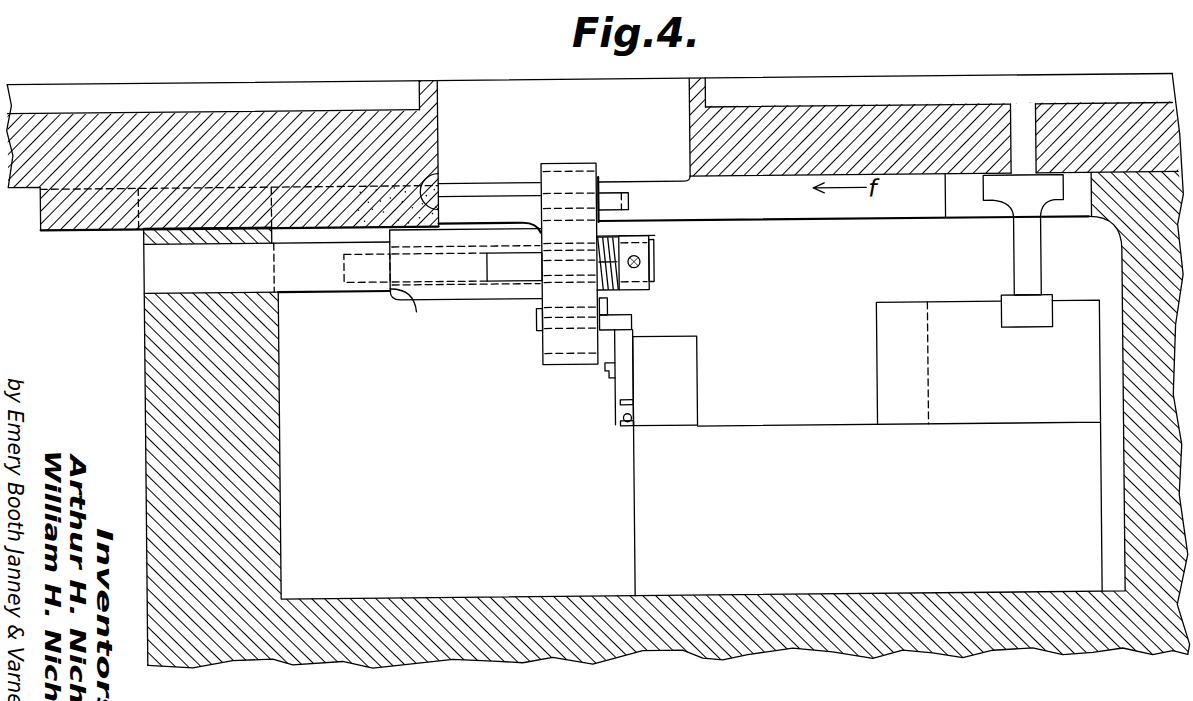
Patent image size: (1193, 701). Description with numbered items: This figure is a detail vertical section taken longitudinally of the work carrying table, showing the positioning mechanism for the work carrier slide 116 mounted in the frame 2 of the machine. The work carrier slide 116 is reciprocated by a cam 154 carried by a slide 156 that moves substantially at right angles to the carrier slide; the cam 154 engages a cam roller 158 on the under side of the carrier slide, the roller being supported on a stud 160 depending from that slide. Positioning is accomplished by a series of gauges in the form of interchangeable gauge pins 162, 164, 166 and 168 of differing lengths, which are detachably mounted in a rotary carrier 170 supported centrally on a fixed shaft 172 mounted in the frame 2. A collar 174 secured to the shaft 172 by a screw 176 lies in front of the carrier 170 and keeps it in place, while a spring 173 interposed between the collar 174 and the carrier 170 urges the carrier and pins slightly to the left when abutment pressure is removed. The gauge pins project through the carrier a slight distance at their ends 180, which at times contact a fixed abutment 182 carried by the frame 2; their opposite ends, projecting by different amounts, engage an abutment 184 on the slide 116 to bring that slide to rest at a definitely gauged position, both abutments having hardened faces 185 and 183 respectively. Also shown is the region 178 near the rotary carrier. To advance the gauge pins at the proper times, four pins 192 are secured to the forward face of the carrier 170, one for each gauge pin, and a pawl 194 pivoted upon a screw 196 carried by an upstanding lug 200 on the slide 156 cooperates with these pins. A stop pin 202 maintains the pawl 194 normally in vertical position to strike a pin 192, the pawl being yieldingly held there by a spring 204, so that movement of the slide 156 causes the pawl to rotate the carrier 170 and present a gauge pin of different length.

The frame 2 is at (162, 384).
The work carrier slide 116 is at (1122, 120).
The cam 154 is at (895, 373).
The slide 156 is at (648, 508).
The cam roller 158 is at (1043, 304).
The stud 160 is at (1025, 246).
The gauge pin 162 is at (537, 316).
The gauge pin 164 is at (513, 265).
The gauge pin 166 is at (497, 194).
The gauge pin 168 is at (370, 268).
The rotary carrier 170 is at (572, 166).
The fixed shaft 172 is at (327, 275).
The spring 173 is at (656, 251).
The collar 174 is at (634, 278).
The screw 176 is at (641, 263).
The shoulder 178 is at (411, 314).
The projecting ends of gauge pins 180 is at (642, 238).
The fixed abutment 182 is at (647, 199).
The hardened face 183 is at (602, 180).
The abutment 184 is at (442, 172).
The hardened face 185 is at (440, 201).
The pins 192 is at (631, 203).
The pawl 194 is at (628, 384).
The screw 196 is at (605, 380).
The upstanding lug 200 is at (677, 369).
The stop pin 202 is at (625, 404).
The spring 204 is at (628, 428).